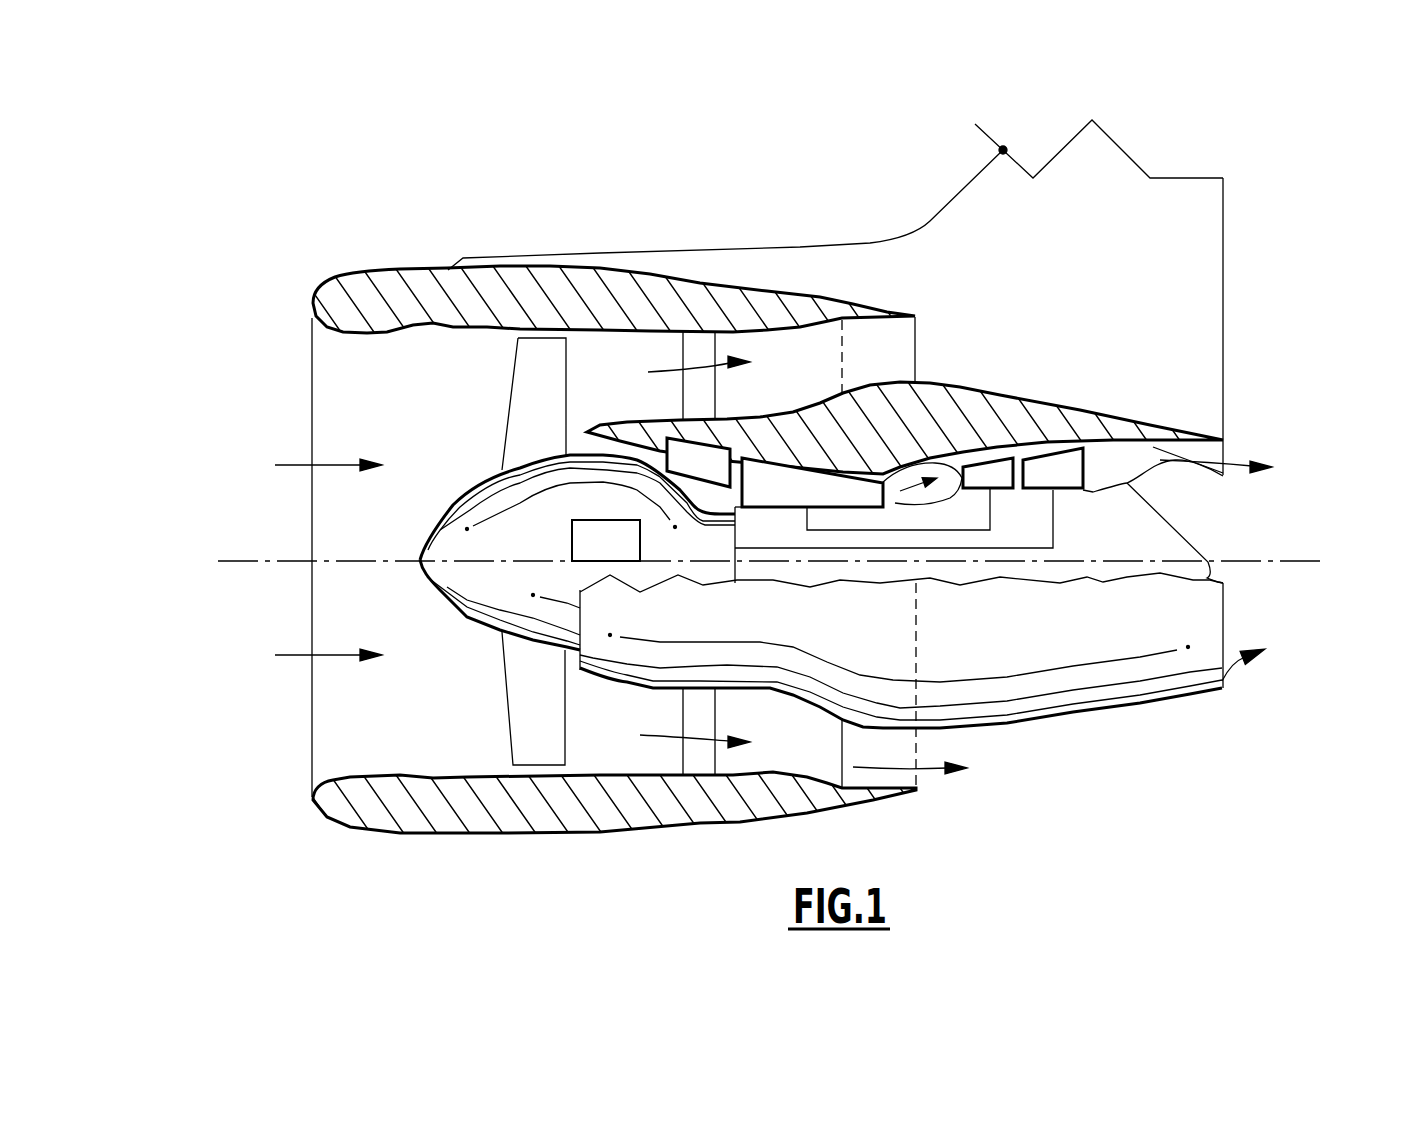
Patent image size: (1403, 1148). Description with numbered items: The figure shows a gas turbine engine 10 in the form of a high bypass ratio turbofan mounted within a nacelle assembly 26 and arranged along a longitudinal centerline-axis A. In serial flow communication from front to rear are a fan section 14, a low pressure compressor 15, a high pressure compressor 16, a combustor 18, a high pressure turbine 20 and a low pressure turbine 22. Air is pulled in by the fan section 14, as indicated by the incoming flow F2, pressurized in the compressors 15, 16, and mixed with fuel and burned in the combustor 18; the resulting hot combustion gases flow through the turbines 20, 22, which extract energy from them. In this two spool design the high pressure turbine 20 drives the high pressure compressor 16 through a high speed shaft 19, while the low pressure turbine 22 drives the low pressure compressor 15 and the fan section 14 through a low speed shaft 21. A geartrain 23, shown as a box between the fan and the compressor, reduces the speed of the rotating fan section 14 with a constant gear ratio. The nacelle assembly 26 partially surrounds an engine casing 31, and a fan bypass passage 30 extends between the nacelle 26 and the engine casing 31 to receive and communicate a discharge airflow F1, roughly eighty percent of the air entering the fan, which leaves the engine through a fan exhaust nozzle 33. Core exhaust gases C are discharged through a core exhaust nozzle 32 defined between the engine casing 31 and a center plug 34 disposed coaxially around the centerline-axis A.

The gas turbine engine 10 is at (340, 232).
The fan section 14 is at (512, 721).
The low pressure compressor 15 is at (697, 515).
The high pressure compressor 16 is at (787, 492).
The combustor 18 is at (933, 500).
The high speed shaft 19 is at (885, 520).
The high pressure turbine 20 is at (1002, 493).
The low speed shaft 21 is at (838, 548).
The low pressure turbine 22 is at (1070, 492).
The geartrain 23 is at (623, 557).
The nacelle assembly 26 is at (403, 252).
The fan bypass passage 30 is at (785, 367).
The engine casing 31 is at (1063, 418).
The core exhaust nozzle 32 is at (1223, 441).
The fan exhaust nozzle 33 is at (890, 311).
The center plug 34 is at (1162, 527).
The discharge airflow F1 is at (679, 551).
The inlet airflow F2 is at (280, 465).
The core exhaust gases C is at (1270, 463).
The longitudinal centerline-axis A is at (1305, 563).